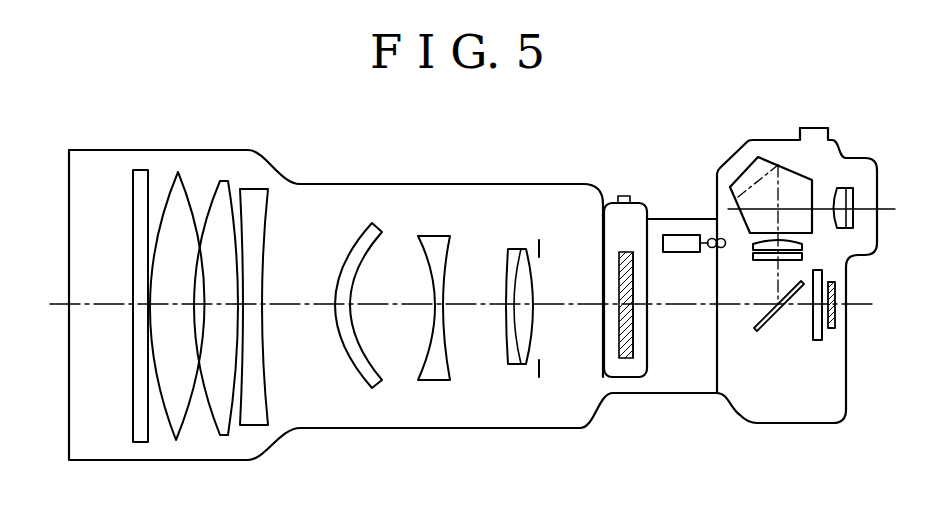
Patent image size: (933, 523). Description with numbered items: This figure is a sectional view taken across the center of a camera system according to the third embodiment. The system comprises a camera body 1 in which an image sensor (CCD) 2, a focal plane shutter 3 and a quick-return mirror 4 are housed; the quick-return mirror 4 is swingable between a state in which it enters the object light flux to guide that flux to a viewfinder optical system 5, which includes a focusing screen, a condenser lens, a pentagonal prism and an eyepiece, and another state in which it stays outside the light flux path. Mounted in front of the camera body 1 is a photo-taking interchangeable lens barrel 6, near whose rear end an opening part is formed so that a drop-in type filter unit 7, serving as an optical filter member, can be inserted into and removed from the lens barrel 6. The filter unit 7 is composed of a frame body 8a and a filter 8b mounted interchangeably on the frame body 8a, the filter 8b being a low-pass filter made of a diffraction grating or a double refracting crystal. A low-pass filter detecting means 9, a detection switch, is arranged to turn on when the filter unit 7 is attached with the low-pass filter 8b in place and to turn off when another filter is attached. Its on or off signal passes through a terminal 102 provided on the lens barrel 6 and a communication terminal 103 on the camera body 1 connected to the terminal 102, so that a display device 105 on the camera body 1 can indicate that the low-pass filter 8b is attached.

The camera body 1 is at (818, 407).
The image sensor (CCD) 2 is at (835, 327).
The focal plane shutter 3 is at (817, 342).
The quick-return mirror 4 is at (758, 332).
The viewfinder optical system 5 is at (830, 183).
The photo-taking interchangeable lens barrel 6 is at (520, 397).
The drop-in type filter unit 7 is at (612, 207).
The frame body 8a is at (637, 368).
The filter 8b is at (622, 362).
The low-pass filter detecting means 9 is at (672, 242).
The terminal 102 is at (710, 238).
The communication terminal 103 is at (720, 238).
The display device 105 is at (817, 128).